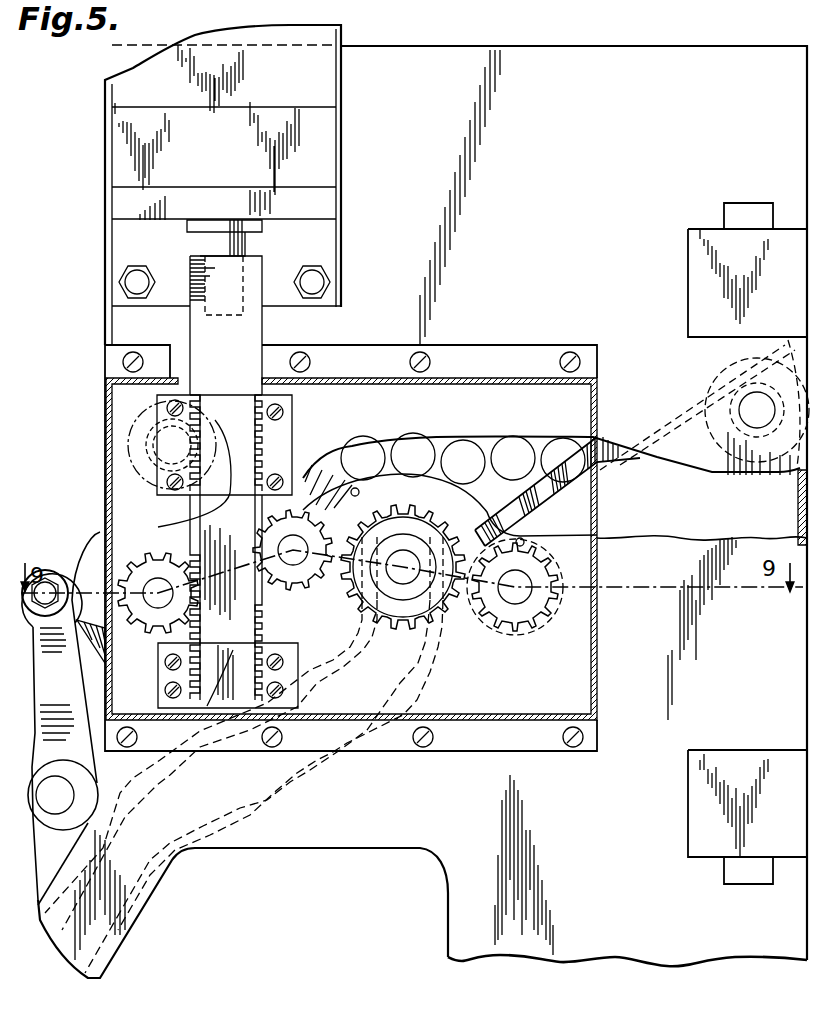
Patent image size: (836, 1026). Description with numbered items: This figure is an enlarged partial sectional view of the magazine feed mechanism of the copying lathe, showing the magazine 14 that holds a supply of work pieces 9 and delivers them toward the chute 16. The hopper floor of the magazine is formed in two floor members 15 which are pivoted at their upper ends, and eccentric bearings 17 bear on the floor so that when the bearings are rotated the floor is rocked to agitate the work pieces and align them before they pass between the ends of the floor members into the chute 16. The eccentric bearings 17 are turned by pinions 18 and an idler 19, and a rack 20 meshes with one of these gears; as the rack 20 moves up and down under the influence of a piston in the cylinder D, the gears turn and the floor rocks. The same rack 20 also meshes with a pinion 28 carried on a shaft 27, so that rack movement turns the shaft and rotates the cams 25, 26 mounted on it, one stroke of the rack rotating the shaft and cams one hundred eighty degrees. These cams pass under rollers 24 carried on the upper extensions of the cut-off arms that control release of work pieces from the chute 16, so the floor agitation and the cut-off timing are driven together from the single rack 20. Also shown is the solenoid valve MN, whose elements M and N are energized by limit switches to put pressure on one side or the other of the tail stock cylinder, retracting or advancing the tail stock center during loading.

The work piece 9 is at (445, 455).
The magazine 14 is at (505, 264).
The floor members 15 is at (325, 490).
The chute 16 is at (133, 935).
The eccentric bearings 17 is at (355, 488).
The pinions 18 is at (318, 592).
The idler 19 is at (415, 640).
The rack 20 is at (252, 343).
The rollers 24 is at (55, 570).
The cam 25 is at (96, 648).
The cam 26 is at (100, 560).
The shaft 27 is at (155, 580).
The pinion 28 is at (150, 630).
The cylinder D is at (310, 150).
The solenoid valve MN M is at (720, 277).
The solenoid valve MN N is at (708, 814).